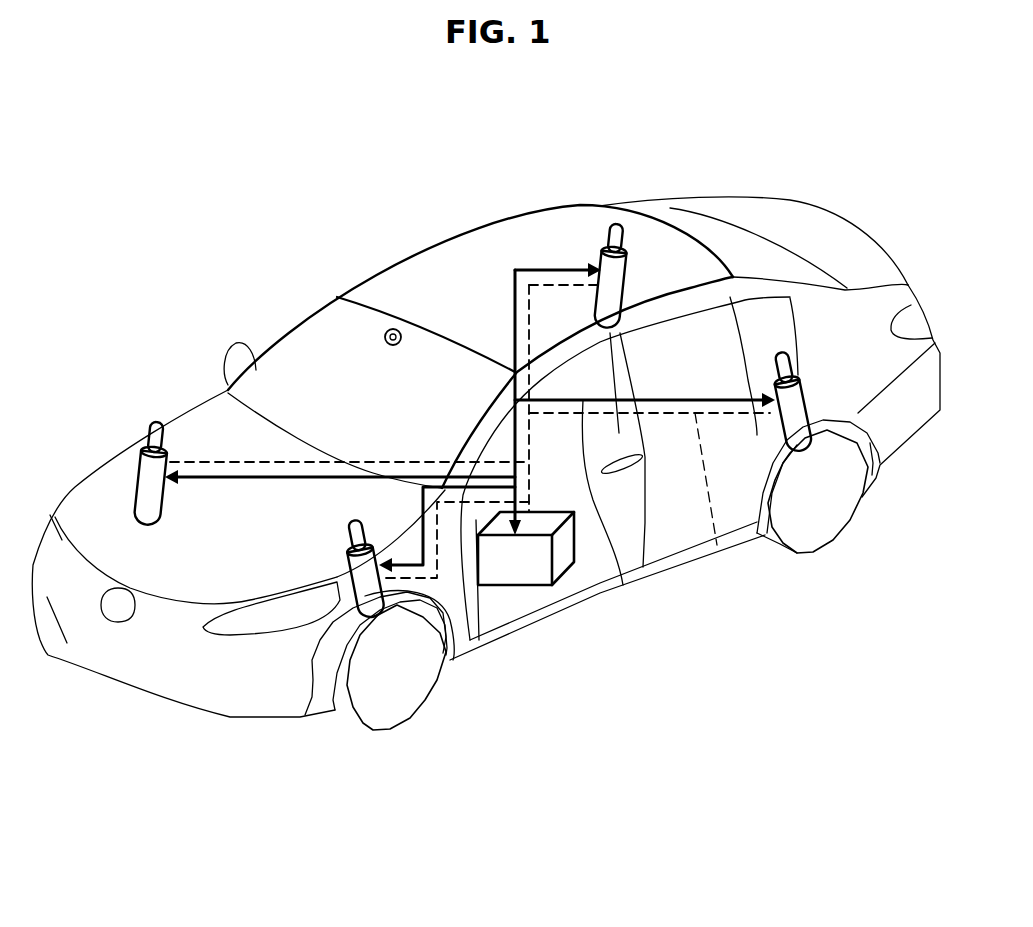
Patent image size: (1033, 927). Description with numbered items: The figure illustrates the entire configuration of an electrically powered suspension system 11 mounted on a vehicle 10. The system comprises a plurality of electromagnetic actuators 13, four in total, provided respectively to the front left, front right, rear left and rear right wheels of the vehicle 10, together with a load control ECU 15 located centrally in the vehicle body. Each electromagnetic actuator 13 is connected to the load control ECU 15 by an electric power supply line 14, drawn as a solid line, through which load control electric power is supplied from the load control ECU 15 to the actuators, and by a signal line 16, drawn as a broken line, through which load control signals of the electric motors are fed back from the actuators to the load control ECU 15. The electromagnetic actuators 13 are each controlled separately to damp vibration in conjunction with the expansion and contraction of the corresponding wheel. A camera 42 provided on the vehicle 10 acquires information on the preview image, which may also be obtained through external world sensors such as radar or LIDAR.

The vehicle 10 is at (450, 235).
The electrically powered suspension system 11 is at (441, 424).
The electromagnetic actuator 13 is at (130, 498).
The electric power supply line 14 is at (623, 585).
The load control ECU 15 is at (512, 585).
The signal line 16 is at (717, 548).
The camera 42 is at (402, 328).